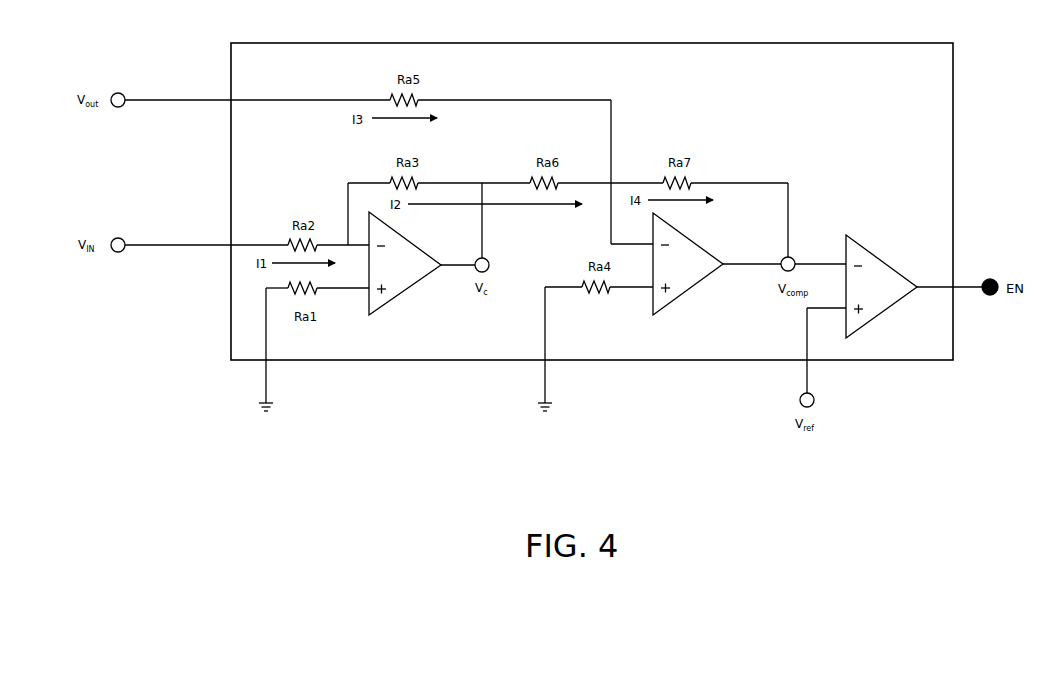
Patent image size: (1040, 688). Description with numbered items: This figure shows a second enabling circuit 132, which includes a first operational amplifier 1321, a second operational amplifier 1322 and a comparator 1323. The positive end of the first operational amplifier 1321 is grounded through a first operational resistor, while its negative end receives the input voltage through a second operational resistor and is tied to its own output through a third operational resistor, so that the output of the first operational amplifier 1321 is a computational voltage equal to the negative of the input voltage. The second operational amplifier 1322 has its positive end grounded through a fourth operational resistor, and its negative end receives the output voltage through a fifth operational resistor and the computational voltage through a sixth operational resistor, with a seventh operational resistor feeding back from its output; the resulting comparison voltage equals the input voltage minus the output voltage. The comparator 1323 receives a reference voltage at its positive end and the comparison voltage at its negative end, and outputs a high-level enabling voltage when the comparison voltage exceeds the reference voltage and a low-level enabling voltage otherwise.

The second enabling circuit 132 is at (877, 43).
The first operational amplifier 1321 is at (407, 291).
The second operational amplifier 1322 is at (688, 290).
The comparator 1323 is at (877, 313).